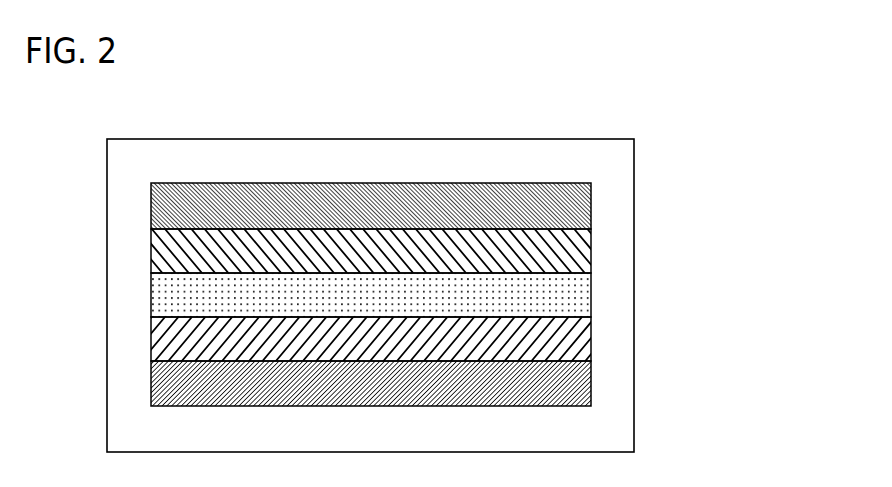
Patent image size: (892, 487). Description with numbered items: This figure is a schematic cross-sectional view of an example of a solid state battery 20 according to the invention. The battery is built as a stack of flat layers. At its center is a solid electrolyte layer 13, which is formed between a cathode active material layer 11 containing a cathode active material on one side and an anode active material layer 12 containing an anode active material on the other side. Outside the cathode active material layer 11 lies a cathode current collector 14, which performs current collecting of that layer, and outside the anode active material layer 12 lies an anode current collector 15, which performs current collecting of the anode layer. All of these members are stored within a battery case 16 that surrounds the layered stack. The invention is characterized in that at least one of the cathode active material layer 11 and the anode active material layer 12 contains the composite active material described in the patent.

The solid state battery 20 is at (618, 95).
The battery case 16 is at (611, 421).
The cathode current collector 14 is at (575, 199).
The cathode active material layer 11 is at (575, 243).
The solid electrolyte layer 13 is at (577, 287).
The anode active material layer 12 is at (577, 332).
The anode current collector 15 is at (577, 376).